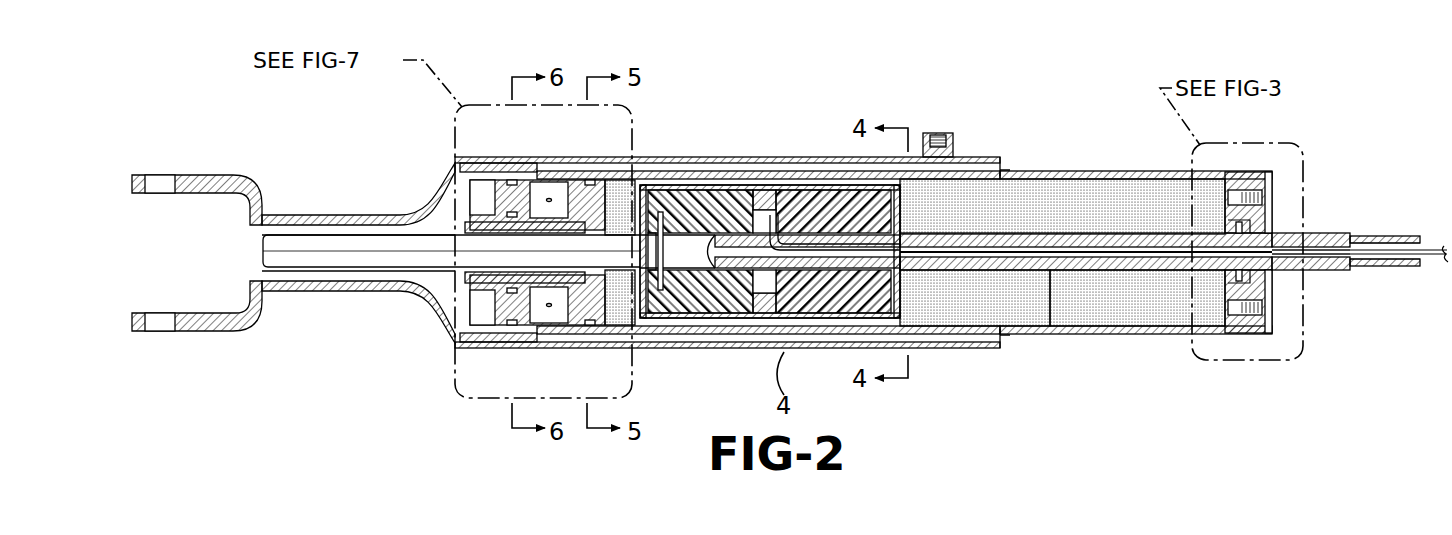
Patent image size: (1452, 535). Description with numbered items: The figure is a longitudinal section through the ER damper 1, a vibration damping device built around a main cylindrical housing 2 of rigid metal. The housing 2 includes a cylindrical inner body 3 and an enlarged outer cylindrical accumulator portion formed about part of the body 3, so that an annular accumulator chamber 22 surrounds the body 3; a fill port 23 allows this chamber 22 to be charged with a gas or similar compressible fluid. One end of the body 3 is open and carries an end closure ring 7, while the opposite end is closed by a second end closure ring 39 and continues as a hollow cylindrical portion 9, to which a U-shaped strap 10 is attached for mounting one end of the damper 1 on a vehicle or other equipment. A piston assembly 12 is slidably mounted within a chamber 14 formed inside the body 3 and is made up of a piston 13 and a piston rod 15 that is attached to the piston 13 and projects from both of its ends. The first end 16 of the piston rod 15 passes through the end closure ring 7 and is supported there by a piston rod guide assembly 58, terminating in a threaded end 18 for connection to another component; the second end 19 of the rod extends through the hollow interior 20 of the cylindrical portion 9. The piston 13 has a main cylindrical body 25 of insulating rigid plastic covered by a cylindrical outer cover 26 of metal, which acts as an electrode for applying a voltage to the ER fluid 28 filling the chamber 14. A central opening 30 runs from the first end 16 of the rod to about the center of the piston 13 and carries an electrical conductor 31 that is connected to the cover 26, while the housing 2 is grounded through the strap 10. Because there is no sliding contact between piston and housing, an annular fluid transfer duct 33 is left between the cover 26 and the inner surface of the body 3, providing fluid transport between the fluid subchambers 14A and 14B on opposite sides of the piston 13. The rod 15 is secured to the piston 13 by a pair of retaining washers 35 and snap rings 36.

The ER damper 1 is at (695, 75).
The main cylindrical housing 2 is at (755, 158).
The cylindrical inner body 3 is at (1038, 170).
The end closure ring 7 is at (1230, 332).
The hollow cylindrical portion 9 is at (345, 227).
The U-shaped strap 10 is at (188, 176).
The piston assembly 12 is at (912, 300).
The piston 13 is at (738, 320).
The chamber 14 is at (1094, 300).
The fluid subchamber 14A is at (1162, 300).
The fluid subchamber 14B is at (615, 196).
The piston rod 15 is at (1044, 272).
The first end of piston rod 16 is at (1335, 270).
The threaded end 18 is at (1403, 236).
The second end of piston rod 19 is at (300, 258).
The hollow interior 20 is at (310, 240).
The annular accumulator chamber 22 is at (786, 170).
The fill port 23 is at (940, 135).
The main cylindrical body 25 is at (822, 300).
The cylindrical outer cover 26 is at (712, 320).
The ER fluid 28 is at (1128, 200).
The central opening 30 is at (1120, 258).
The electrical conductor 31 is at (1432, 258).
The annular fluid transfer duct 33 is at (820, 190).
The retaining washers 35 is at (652, 282).
The snap rings 36 is at (658, 240).
The second end closure ring 39 is at (492, 300).
The piston rod guide assembly 58 is at (1272, 228).